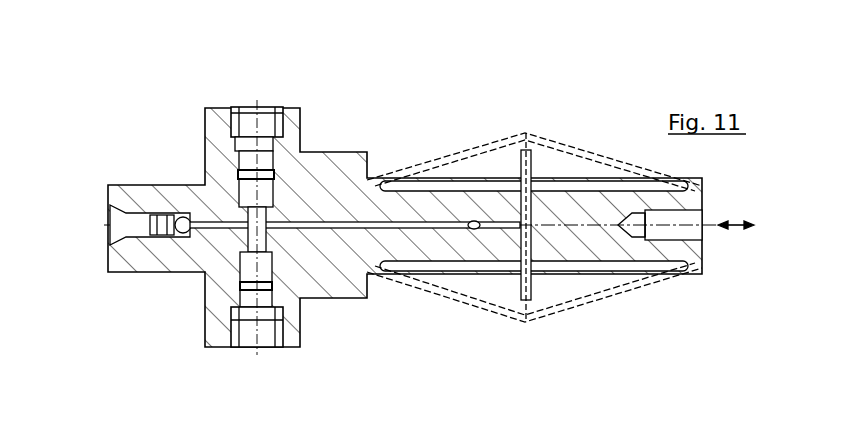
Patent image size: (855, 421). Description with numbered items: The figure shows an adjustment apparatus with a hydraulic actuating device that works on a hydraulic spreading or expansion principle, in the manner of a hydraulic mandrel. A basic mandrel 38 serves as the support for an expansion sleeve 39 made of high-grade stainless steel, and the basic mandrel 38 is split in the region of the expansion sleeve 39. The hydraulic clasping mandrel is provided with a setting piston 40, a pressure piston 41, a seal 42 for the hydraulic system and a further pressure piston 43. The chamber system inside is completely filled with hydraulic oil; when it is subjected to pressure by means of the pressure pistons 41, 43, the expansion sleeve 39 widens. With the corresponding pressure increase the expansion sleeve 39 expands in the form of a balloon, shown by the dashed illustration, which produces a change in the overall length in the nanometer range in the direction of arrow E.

The basic mandrel 38 is at (697, 250).
The expansion sleeve 39 is at (556, 325).
The setting piston 40 is at (236, 345).
The pressure piston 41 is at (250, 152).
The seal 42 is at (245, 175).
The pressure piston 43 is at (222, 102).
The arrow E is at (736, 230).